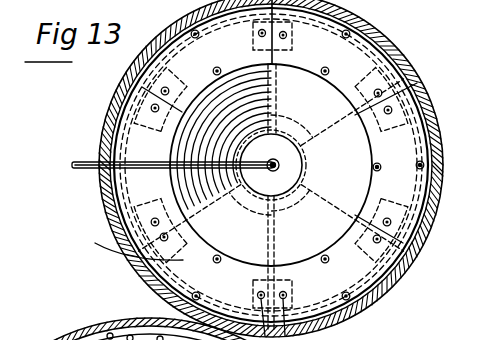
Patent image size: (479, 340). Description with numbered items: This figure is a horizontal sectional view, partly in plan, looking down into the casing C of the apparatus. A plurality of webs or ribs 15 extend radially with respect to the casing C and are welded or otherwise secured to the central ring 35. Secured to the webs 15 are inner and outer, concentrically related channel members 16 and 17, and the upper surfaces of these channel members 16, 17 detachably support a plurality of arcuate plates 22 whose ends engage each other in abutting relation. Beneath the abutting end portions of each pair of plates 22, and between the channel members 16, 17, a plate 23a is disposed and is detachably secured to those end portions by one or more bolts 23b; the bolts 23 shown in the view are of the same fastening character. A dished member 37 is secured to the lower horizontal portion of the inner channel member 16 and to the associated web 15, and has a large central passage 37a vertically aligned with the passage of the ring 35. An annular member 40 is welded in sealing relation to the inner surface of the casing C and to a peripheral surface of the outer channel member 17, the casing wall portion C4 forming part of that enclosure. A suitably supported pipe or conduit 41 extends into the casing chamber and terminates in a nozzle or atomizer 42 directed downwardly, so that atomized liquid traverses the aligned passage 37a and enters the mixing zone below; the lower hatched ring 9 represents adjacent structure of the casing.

The casing C is at (102, 106).
The casing flange C4 is at (383, 287).
The base ring 9 is at (103, 337).
The web 15 is at (318, 122).
The inner channel member 16 is at (271, 165).
The outer channel member 17 is at (413, 103).
The arcuate plate 22 is at (138, 202).
The fastening bolt 23 is at (329, 70).
The plate 23a is at (290, 179).
The bolt 23b is at (261, 36).
The ring 35 is at (283, 203).
The dished member 37 is at (378, 165).
The central passage 37a is at (302, 165).
The annular member 40 is at (110, 185).
The pipe 41 is at (88, 151).
The nozzle 42 is at (282, 157).